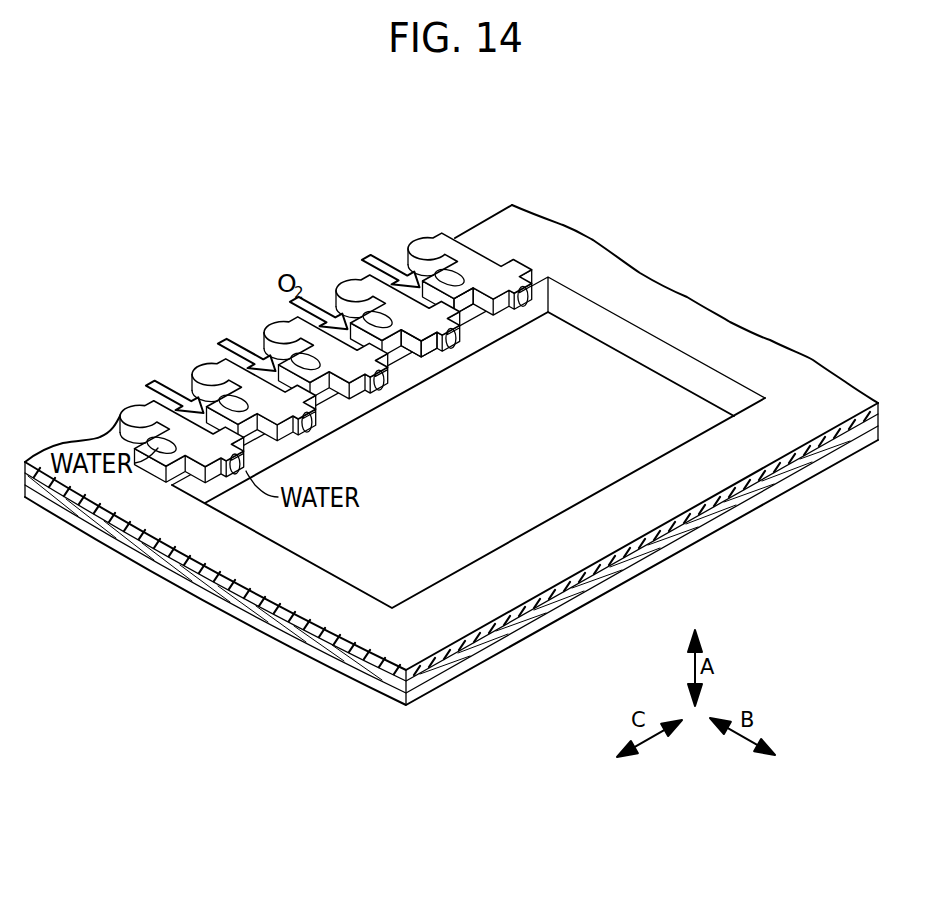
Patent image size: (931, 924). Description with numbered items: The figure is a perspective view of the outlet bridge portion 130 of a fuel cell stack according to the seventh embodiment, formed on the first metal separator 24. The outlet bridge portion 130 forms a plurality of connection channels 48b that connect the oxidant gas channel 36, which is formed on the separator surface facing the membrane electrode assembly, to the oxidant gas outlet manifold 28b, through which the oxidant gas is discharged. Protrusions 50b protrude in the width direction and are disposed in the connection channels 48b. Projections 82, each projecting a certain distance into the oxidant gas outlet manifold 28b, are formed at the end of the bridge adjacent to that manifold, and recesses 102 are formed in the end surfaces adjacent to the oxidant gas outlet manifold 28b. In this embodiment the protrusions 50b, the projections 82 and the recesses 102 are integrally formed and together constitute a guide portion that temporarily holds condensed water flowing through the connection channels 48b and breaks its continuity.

The first metal separator 24 is at (482, 97).
The outlet bridge portion 130 is at (504, 238).
The oxidant gas outlet manifold 28b is at (580, 433).
The projections 82 is at (464, 273).
The recesses 102 is at (470, 338).
The oxidant gas channel 36 is at (391, 332).
The protrusions 50b is at (416, 348).
The connection channels 48b is at (163, 383).